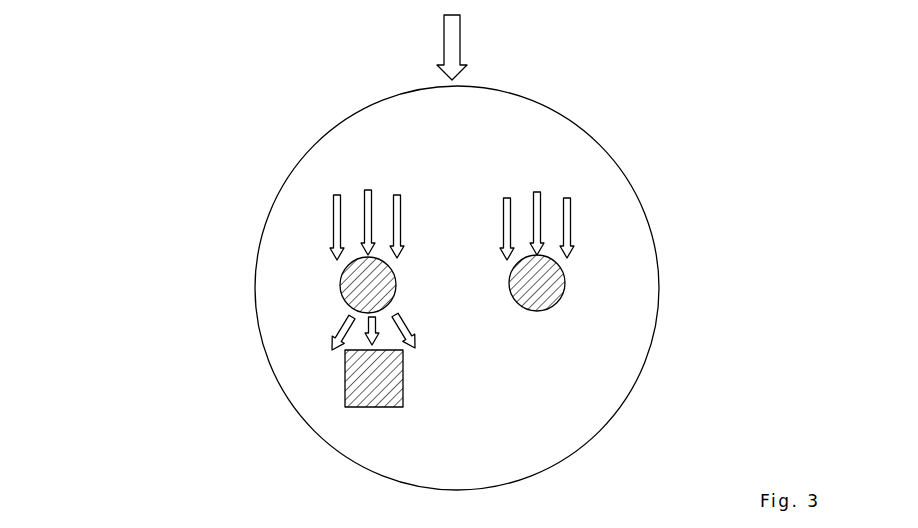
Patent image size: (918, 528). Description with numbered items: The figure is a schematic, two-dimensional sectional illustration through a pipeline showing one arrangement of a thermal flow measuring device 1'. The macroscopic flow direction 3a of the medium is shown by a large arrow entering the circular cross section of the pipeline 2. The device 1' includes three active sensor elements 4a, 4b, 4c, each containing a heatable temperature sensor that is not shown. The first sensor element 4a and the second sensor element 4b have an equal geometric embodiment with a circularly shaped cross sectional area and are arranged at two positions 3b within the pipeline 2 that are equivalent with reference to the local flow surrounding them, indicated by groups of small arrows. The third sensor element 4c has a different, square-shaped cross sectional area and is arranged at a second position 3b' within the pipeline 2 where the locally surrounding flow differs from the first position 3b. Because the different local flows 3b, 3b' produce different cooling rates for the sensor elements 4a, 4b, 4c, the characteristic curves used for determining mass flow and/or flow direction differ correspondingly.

The thermal flow measuring device 1' is at (108, 100).
The pipeline 2 is at (283, 393).
The macroscopic flow direction 3a is at (436, 32).
The position / local flow 3b is at (424, 225).
The second position / local flow 3b' is at (347, 332).
The first sensor element 4a is at (366, 278).
The second sensor element 4b is at (536, 277).
The third sensor element 4c is at (384, 378).